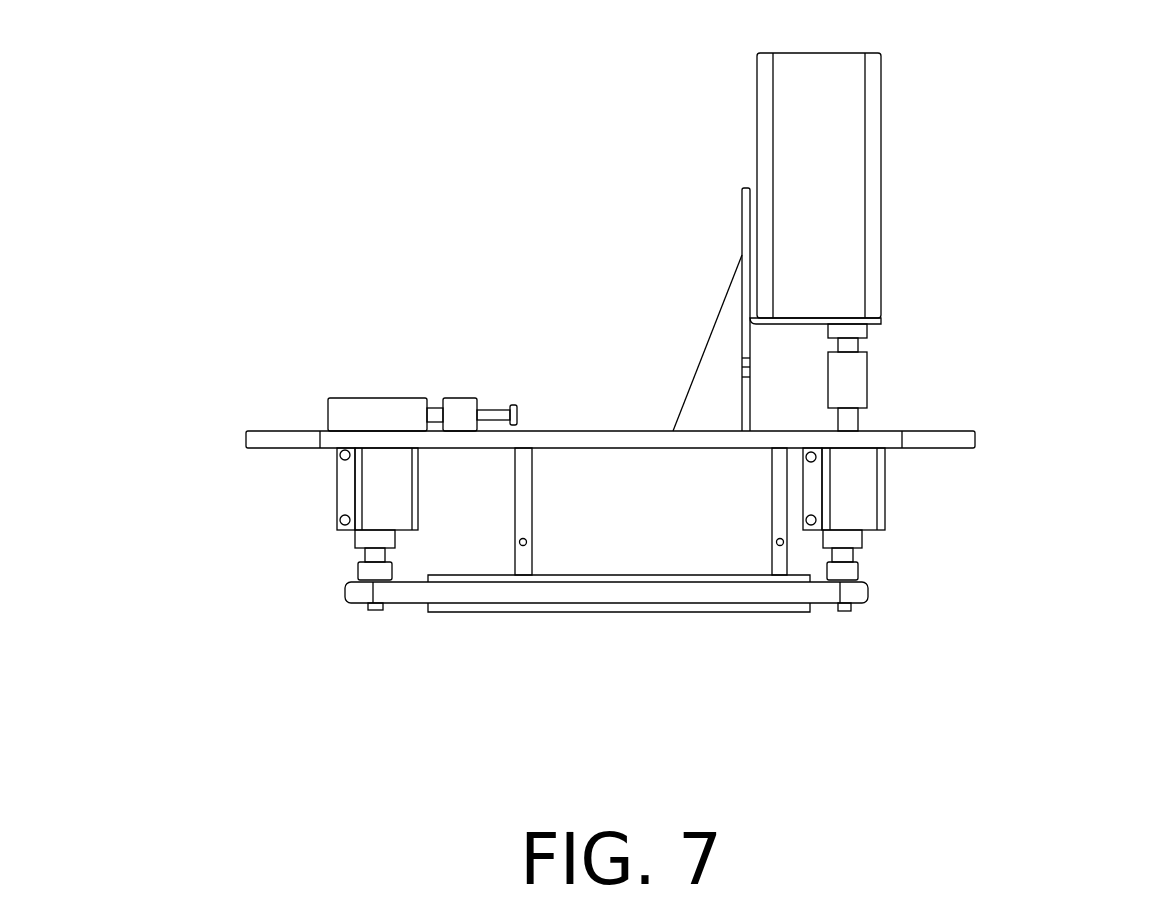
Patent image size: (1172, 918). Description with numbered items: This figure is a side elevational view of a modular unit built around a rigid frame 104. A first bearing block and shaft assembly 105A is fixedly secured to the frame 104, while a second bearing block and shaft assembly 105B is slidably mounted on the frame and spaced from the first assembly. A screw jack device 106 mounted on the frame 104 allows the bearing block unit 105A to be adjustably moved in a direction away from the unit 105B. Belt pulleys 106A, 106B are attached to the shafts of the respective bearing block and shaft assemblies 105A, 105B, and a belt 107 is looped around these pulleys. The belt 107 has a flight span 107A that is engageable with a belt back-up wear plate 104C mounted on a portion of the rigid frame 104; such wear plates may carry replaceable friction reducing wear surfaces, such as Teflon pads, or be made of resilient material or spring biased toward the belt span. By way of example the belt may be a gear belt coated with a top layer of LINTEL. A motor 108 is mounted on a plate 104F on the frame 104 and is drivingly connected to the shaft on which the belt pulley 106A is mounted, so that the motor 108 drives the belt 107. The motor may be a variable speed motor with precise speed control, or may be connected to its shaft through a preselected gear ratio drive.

The frame 104 is at (878, 442).
The belt back-up wear plate 104C is at (548, 583).
The plate 104F is at (742, 205).
The first bearing block and shaft assembly 105A is at (860, 483).
The second bearing block and shaft assembly 105B is at (348, 415).
The screw jack device 106 is at (460, 413).
The belt pulley 106A is at (845, 575).
The belt pulley 106B is at (372, 566).
The belt 107 is at (855, 595).
The flight span 107A is at (623, 588).
The motor 108 is at (847, 165).